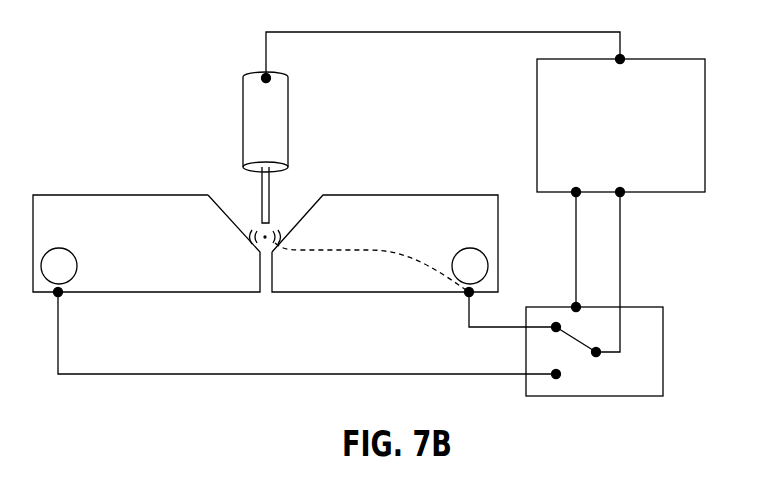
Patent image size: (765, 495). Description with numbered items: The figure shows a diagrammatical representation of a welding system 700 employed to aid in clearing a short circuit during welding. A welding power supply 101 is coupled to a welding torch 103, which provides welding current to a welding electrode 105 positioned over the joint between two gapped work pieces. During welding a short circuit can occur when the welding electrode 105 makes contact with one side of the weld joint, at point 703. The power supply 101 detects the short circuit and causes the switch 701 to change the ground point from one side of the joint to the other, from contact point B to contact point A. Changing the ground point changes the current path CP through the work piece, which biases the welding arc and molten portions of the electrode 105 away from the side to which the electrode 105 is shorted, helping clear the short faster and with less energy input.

The system 700 is at (157, 128).
The welding power supply 101 is at (537, 128).
The welding torch 103 is at (277, 109).
The welding electrode 105 is at (268, 193).
The point 703 is at (254, 238).
The current path CP is at (368, 250).
The switch 701 is at (596, 396).